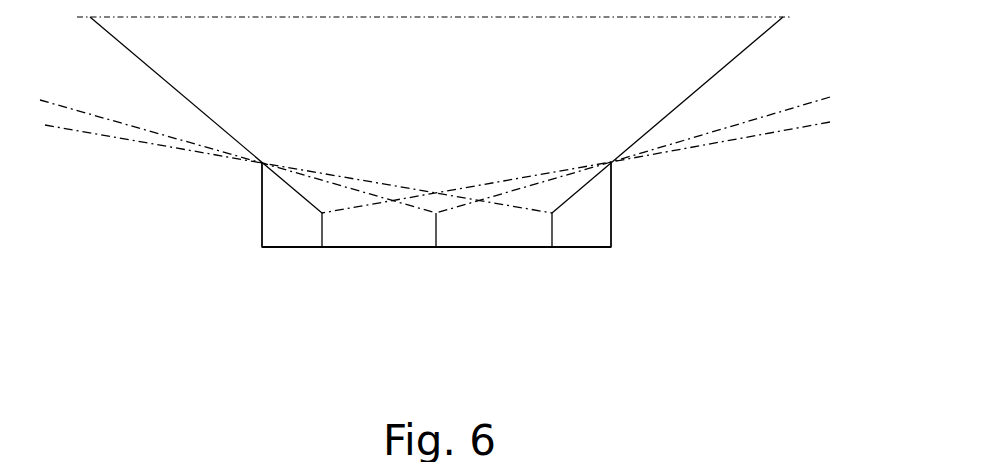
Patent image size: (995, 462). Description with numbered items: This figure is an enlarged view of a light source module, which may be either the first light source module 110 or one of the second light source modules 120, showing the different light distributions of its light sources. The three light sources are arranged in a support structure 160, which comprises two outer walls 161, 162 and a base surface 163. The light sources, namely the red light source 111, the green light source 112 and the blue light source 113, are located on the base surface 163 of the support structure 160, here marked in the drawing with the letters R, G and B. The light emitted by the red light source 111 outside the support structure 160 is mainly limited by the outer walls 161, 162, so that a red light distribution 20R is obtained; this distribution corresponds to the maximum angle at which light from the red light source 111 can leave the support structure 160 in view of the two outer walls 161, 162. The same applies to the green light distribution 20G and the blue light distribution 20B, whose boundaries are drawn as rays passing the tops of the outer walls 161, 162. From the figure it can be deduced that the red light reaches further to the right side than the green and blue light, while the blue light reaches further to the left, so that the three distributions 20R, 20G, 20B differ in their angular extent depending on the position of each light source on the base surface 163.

The red light distribution 20R is at (163, 78).
The blue light distribution 20B is at (707, 80).
The green light distribution 20G is at (765, 117).
The support structure 160 is at (260, 248).
The outer wall 161 is at (260, 193).
The outer wall 162 is at (612, 193).
The base surface 163 is at (398, 250).
The first light source module 110 is at (612, 247).
The second light source module 120 is at (522, 275).
The red light source 111 is at (322, 285).
The green light source 112 is at (436, 285).
The blue light source 113 is at (552, 285).